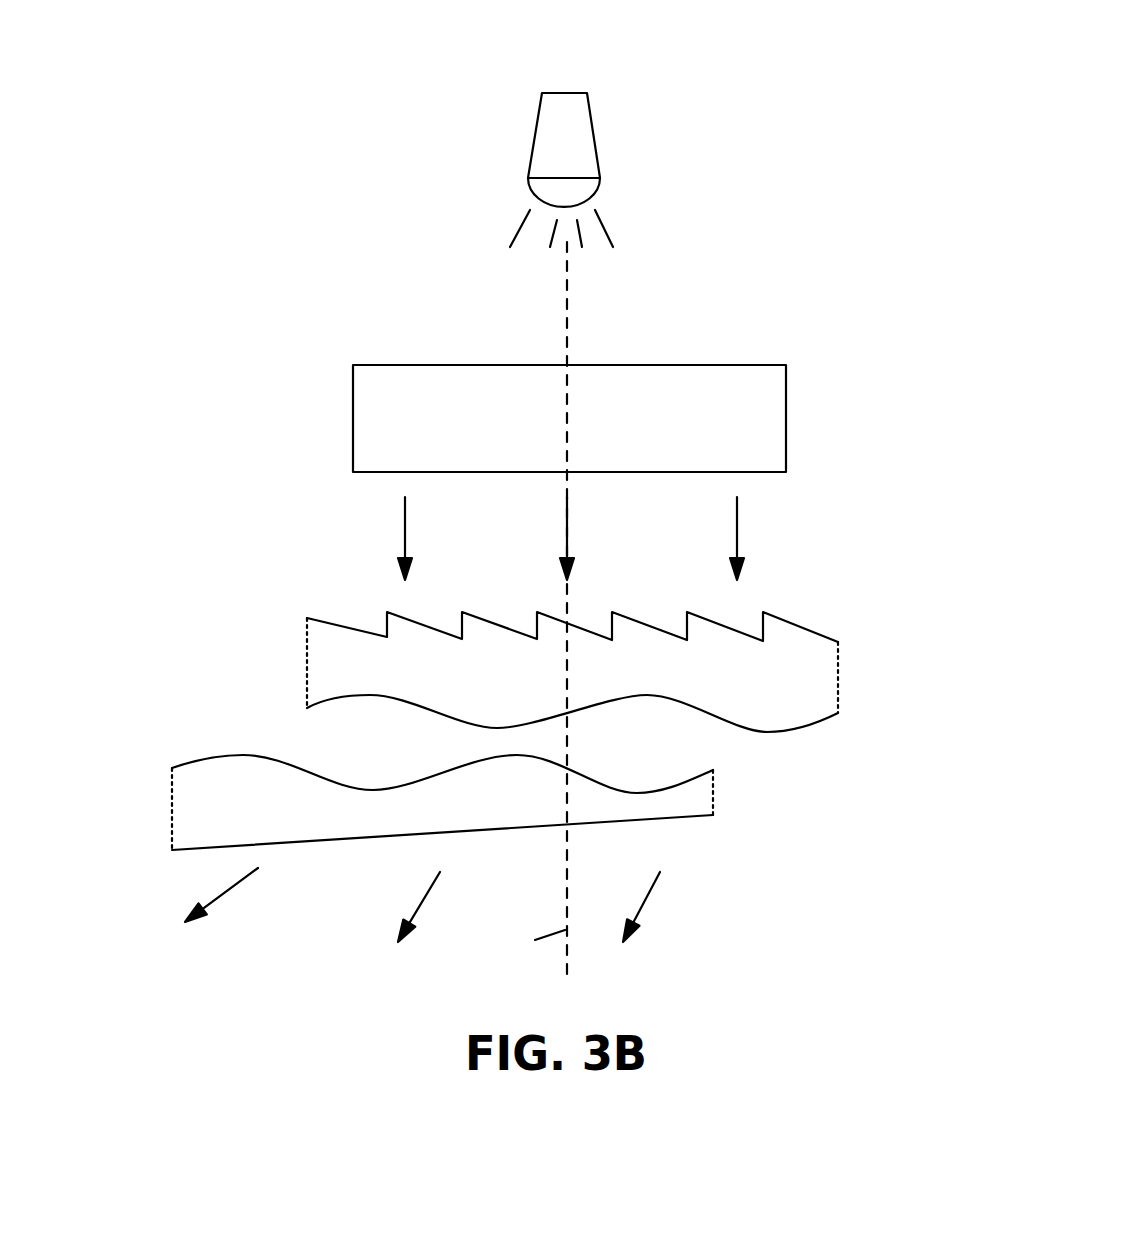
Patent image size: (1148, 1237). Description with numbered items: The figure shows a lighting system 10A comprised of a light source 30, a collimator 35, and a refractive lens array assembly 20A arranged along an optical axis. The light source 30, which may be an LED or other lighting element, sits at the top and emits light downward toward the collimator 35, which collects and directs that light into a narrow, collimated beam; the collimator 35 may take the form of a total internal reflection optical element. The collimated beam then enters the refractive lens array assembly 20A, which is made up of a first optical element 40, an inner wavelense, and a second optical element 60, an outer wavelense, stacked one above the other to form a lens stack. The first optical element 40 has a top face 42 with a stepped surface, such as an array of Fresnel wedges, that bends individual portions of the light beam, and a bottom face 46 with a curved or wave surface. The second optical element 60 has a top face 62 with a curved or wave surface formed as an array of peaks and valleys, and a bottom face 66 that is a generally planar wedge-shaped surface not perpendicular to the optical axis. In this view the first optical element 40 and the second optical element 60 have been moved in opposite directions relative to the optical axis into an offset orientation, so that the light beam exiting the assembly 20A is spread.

The lighting system 10A is at (286, 73).
The light source 30 is at (590, 125).
The collimator 35 is at (786, 408).
The refractive lens array assembly 20A is at (162, 877).
The first optical element 40 is at (618, 685).
The top face 42 is at (773, 632).
The bottom face 46 is at (813, 727).
The second optical element 60 is at (481, 754).
The top face 62 is at (252, 757).
The bottom face 66 is at (675, 820).